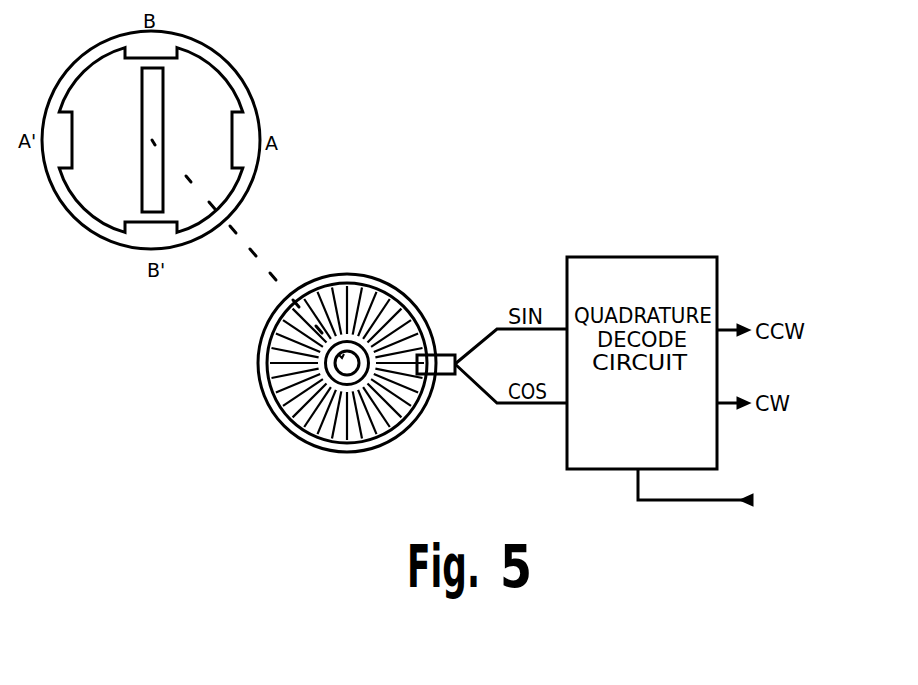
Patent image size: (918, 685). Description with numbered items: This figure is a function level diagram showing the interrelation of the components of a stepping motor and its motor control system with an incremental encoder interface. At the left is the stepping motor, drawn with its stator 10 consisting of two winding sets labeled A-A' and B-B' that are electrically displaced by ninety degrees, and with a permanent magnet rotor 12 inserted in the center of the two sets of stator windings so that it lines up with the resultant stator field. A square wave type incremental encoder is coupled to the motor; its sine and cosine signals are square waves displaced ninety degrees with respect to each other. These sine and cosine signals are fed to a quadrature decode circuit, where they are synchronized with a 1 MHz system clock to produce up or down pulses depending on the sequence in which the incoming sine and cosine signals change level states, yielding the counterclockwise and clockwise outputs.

The stator 10 is at (232, 62).
The permanent magnet rotor 12 is at (150, 175).
The 1 MHz clock input 1 is at (732, 491).